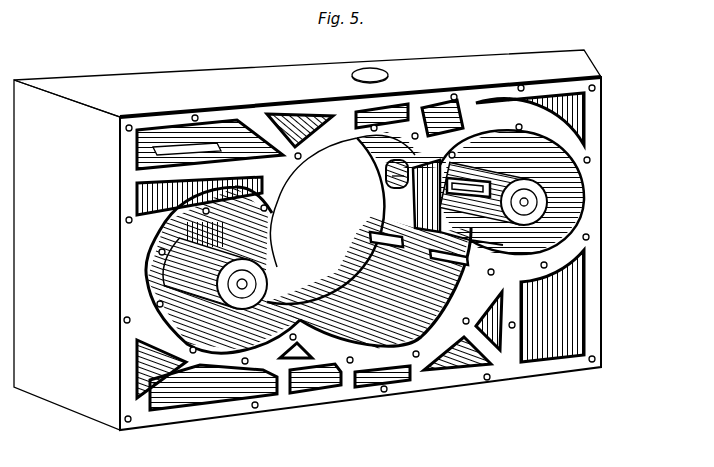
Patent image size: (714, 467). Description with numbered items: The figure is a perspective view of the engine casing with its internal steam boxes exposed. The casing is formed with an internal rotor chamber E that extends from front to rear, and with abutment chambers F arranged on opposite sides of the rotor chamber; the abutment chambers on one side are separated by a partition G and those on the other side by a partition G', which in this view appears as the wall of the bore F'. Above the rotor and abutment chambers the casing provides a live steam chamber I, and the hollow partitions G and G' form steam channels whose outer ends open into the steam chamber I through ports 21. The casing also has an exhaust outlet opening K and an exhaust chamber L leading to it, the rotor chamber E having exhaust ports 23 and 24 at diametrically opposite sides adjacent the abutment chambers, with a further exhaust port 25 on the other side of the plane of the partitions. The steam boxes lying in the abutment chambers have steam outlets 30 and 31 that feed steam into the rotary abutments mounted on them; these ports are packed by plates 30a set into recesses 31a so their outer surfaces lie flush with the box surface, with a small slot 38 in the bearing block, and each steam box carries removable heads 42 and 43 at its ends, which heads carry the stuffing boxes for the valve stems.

The live steam chamber I is at (137, 157).
The exhaust outlet opening K is at (372, 70).
The ports 21 is at (163, 143).
The exhaust port 23 is at (243, 123).
The exhaust chamber L is at (213, 394).
The abutment chamber F is at (458, 238).
The second cylinder bore F' is at (185, 270).
The rotor chamber E is at (369, 244).
The partition G is at (408, 196).
The partition G' is at (223, 268).
The removable head 42 is at (268, 282).
The removable head 43 is at (560, 192).
The steam outlet 30 is at (457, 183).
The bearing slot 38 is at (487, 190).
The plates 30a is at (503, 217).
The steam outlet 31 is at (385, 166).
The recesses 31a is at (393, 178).
The exhaust port 25 is at (397, 247).
The exhaust port 24 is at (449, 268).